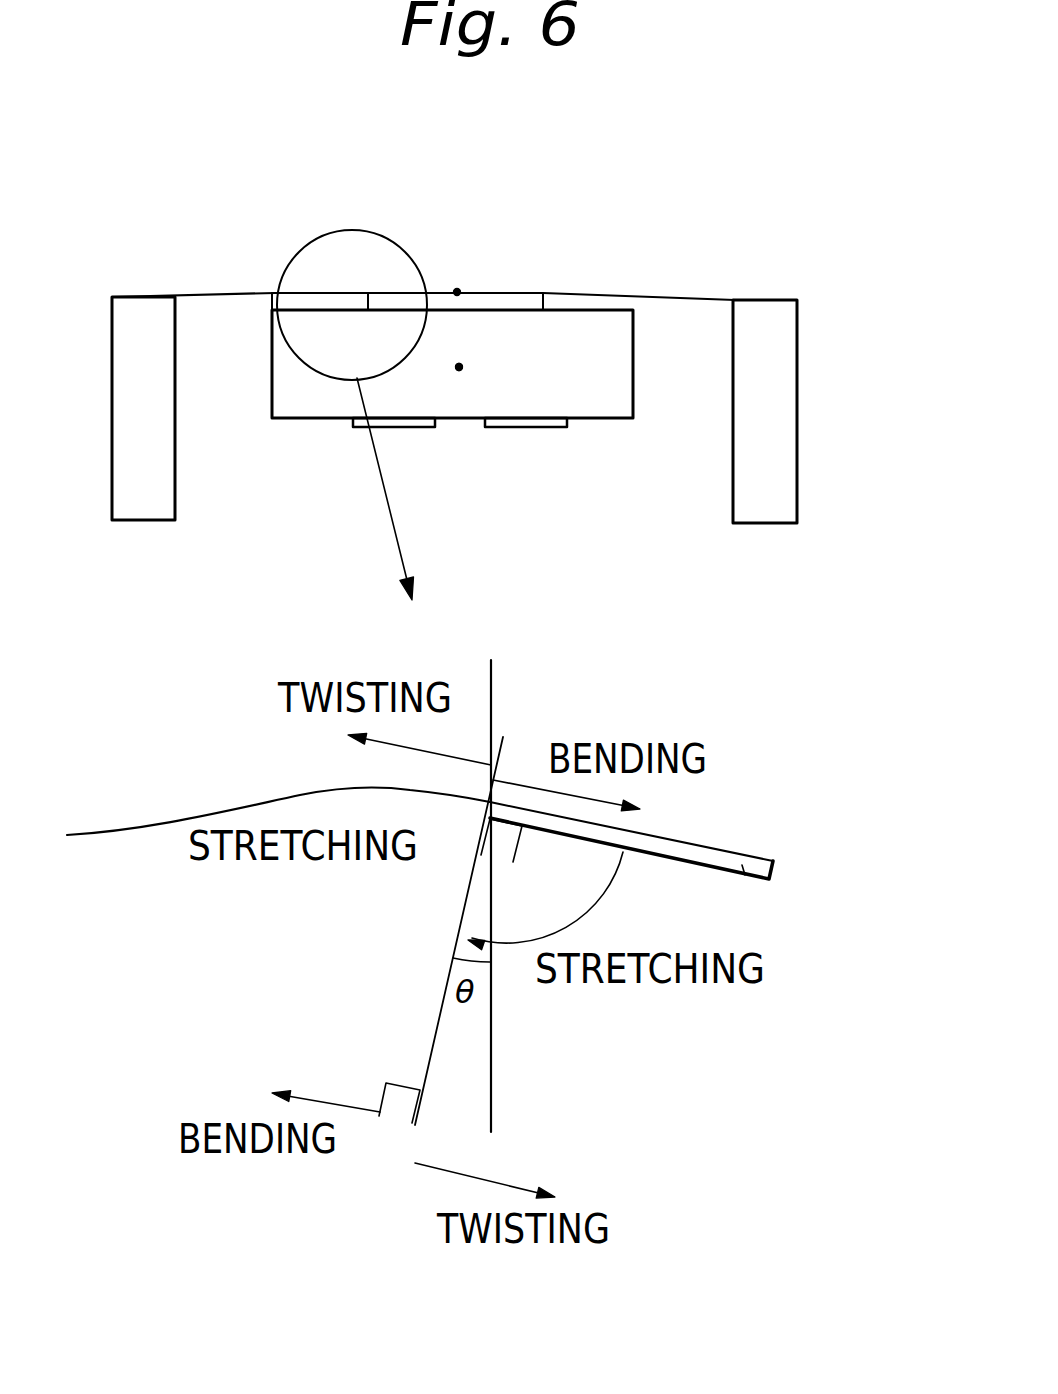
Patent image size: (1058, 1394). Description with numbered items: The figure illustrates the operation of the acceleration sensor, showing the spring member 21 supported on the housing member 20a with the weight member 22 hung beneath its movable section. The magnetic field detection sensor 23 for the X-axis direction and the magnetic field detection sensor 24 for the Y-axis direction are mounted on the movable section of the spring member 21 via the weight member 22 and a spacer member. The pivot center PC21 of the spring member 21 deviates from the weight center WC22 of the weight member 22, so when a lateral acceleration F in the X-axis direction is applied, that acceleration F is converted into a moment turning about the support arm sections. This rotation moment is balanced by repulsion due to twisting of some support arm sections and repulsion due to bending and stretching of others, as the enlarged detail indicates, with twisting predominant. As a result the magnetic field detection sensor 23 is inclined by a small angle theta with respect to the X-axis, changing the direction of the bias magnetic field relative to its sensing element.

The housing member 20a is at (778, 399).
The spring member 21 is at (595, 294).
The pivot center PC21 is at (457, 292).
The weight member 22 is at (610, 400).
The magnetic field detection sensor 23 is at (532, 432).
The magnetic field detection sensor 24 is at (362, 428).
The acceleration F is at (466, 367).
The weight center WC22 is at (459, 367).